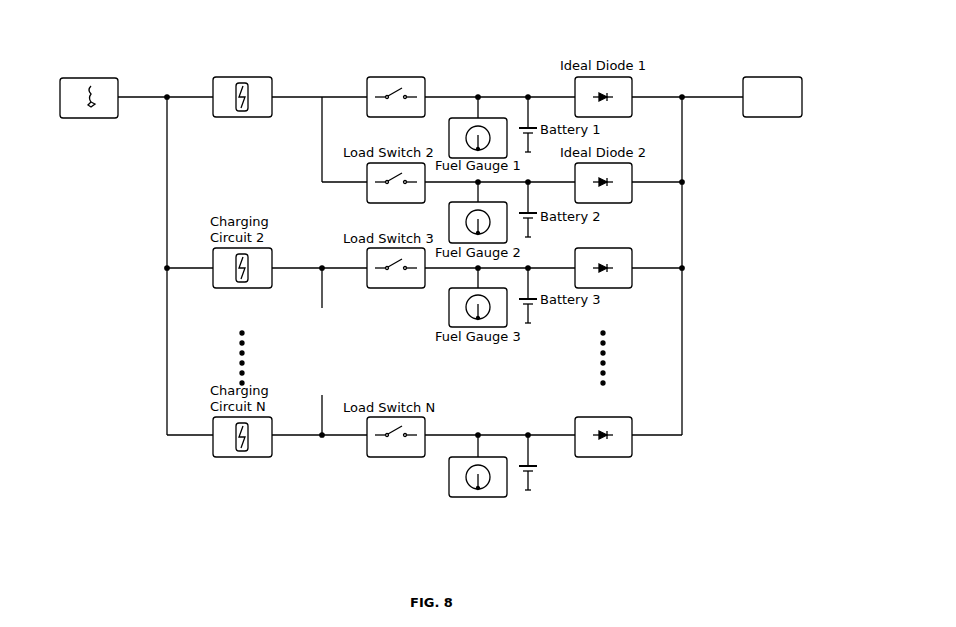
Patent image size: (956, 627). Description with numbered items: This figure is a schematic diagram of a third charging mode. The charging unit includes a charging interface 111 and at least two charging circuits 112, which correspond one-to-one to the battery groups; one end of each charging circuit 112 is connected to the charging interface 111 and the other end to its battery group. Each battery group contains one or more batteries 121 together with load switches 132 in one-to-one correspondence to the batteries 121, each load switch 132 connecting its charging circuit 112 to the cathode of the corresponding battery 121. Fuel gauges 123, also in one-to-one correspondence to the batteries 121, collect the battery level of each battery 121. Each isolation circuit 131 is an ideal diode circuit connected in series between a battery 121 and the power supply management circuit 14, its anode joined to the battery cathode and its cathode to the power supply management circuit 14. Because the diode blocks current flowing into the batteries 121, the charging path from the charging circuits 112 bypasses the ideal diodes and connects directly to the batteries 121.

The charging interface 111 is at (118, 90).
The charging circuit 112 is at (225, 118).
The load switch 132 is at (425, 93).
The fuel gauge 123 is at (508, 497).
The battery 121 is at (540, 480).
The isolation circuit 131 is at (633, 457).
The power supply management circuit 14 is at (770, 118).